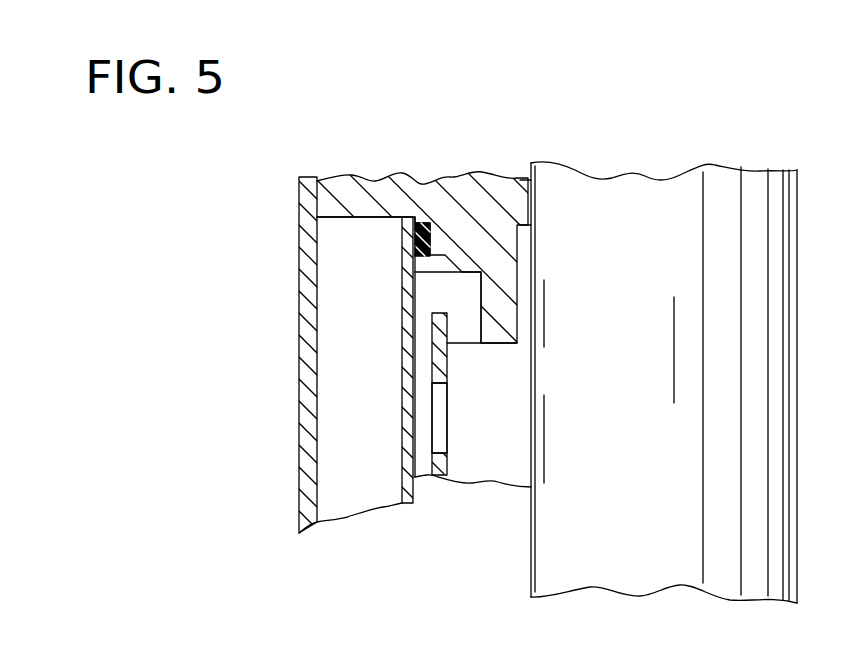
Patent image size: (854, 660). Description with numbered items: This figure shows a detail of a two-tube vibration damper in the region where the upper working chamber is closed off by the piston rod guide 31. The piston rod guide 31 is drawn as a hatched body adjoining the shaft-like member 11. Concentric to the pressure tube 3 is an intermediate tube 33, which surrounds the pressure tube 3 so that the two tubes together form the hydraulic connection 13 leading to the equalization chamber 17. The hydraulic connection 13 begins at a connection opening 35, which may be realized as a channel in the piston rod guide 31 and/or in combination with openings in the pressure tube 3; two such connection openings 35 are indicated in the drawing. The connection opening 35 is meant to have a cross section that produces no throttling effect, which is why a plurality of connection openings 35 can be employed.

The pressure tube 3 is at (433, 476).
The shaft 11 is at (510, 428).
The hydraulic connection 13 is at (423, 447).
The equalization chamber 17 is at (340, 402).
The piston rod guide 31 is at (473, 203).
The intermediate tube 33 is at (407, 353).
The connection opening 35 is at (427, 287).